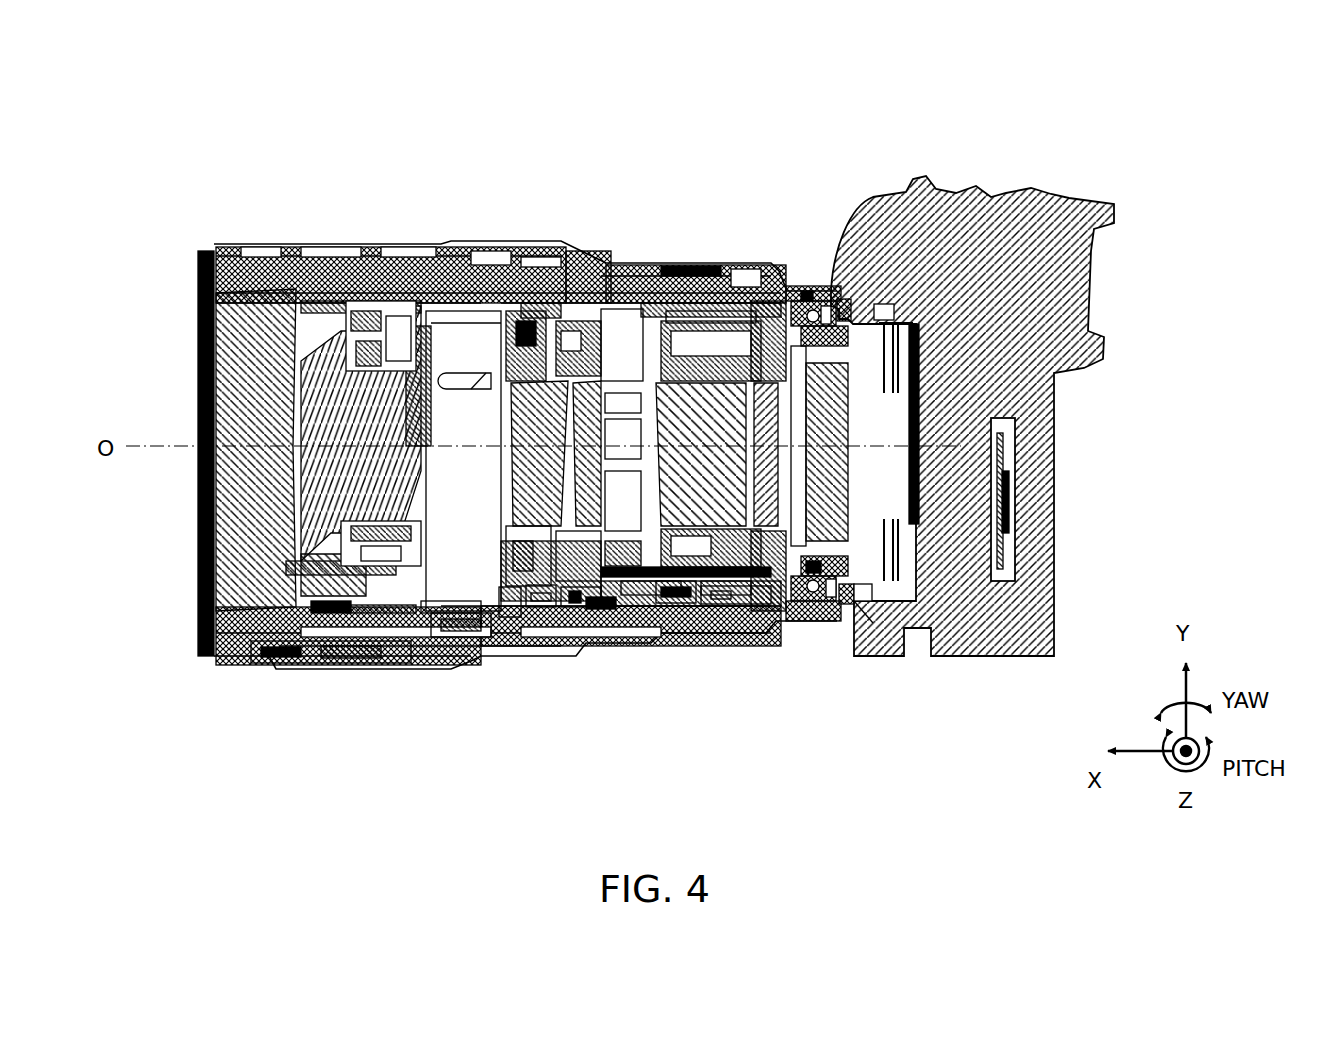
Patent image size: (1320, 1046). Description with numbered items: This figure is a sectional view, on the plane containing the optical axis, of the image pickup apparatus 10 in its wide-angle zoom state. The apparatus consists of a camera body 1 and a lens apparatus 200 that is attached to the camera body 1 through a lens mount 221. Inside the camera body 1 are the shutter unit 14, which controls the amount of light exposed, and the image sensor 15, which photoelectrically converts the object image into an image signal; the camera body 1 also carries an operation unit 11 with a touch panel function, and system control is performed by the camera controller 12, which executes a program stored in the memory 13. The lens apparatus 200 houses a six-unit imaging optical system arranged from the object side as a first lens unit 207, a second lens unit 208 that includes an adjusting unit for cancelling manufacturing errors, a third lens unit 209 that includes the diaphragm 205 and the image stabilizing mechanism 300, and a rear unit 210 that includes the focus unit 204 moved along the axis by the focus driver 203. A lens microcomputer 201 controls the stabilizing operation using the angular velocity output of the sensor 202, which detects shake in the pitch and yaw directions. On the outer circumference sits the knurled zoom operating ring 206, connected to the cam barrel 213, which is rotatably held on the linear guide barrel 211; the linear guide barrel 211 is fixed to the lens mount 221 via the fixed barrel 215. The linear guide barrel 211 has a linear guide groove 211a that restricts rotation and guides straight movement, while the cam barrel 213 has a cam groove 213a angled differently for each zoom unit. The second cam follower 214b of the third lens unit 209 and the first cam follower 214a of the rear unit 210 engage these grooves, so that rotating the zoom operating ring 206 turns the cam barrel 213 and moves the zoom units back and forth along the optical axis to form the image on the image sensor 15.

The image pickup apparatus 10 is at (1212, 55).
The lens apparatus 200 is at (775, 95).
The camera body 1 is at (1100, 95).
The third lens unit 209 is at (612, 178).
The diaphragm 205 is at (508, 300).
The image stabilizing mechanism 300 is at (566, 300).
The zoom operating ring 206 is at (610, 252).
The focus driver 203 is at (697, 318).
The lens mount 221 is at (792, 290).
The operation unit 11 is at (824, 298).
The shutter unit 14 is at (893, 318).
The image sensor 15 is at (920, 420).
The camera controller 12 is at (1013, 505).
The memory 13 is at (876, 603).
The lens microcomputer 201 is at (818, 622).
The focus unit 204 is at (781, 612).
The rear unit 210 is at (820, 695).
The sensor 202 is at (735, 640).
The first cam follower 214a is at (680, 612).
The fixed barrel 215 is at (578, 622).
The second cam follower 214b is at (540, 642).
The cam groove 213a is at (600, 606).
The cam barrel 213 is at (480, 632).
The linear guide groove 211a is at (486, 617).
The linear guide barrel 211 is at (346, 627).
The second lens unit 208 is at (343, 362).
The first lens unit 207 is at (236, 340).